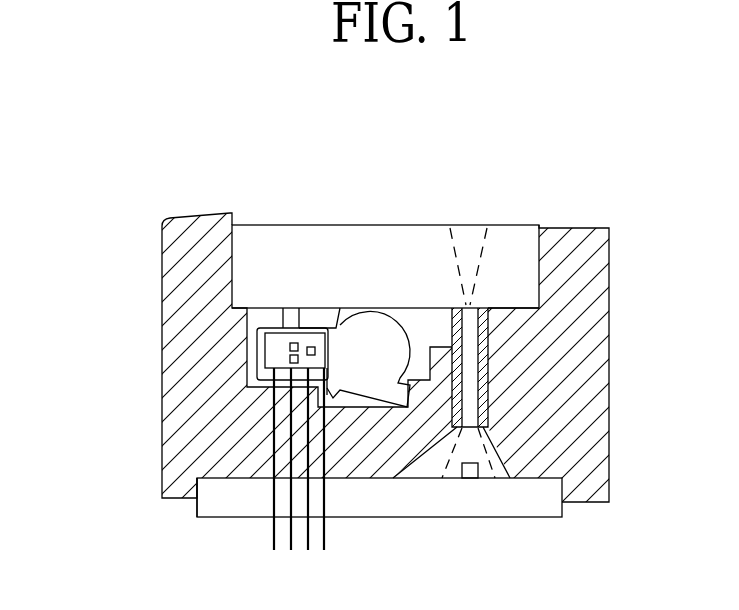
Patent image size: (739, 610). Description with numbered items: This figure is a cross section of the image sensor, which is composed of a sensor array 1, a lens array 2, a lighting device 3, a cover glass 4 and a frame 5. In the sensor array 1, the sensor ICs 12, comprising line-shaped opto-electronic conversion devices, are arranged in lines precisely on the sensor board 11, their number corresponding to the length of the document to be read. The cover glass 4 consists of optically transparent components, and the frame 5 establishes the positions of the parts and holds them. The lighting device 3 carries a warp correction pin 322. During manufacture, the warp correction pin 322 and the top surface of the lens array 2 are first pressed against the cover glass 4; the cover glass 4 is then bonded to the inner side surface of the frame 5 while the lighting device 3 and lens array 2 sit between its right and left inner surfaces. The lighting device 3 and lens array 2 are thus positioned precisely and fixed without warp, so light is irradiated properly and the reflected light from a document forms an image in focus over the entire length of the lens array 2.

The sensor array 1 is at (397, 517).
The sensor board 11 is at (229, 503).
The sensor IC 12 is at (480, 467).
The lens array 2 is at (466, 350).
The lighting device 3 is at (380, 320).
The cover glass 4 is at (303, 228).
The frame 5 is at (172, 386).
The warp correction pin 322 is at (283, 320).